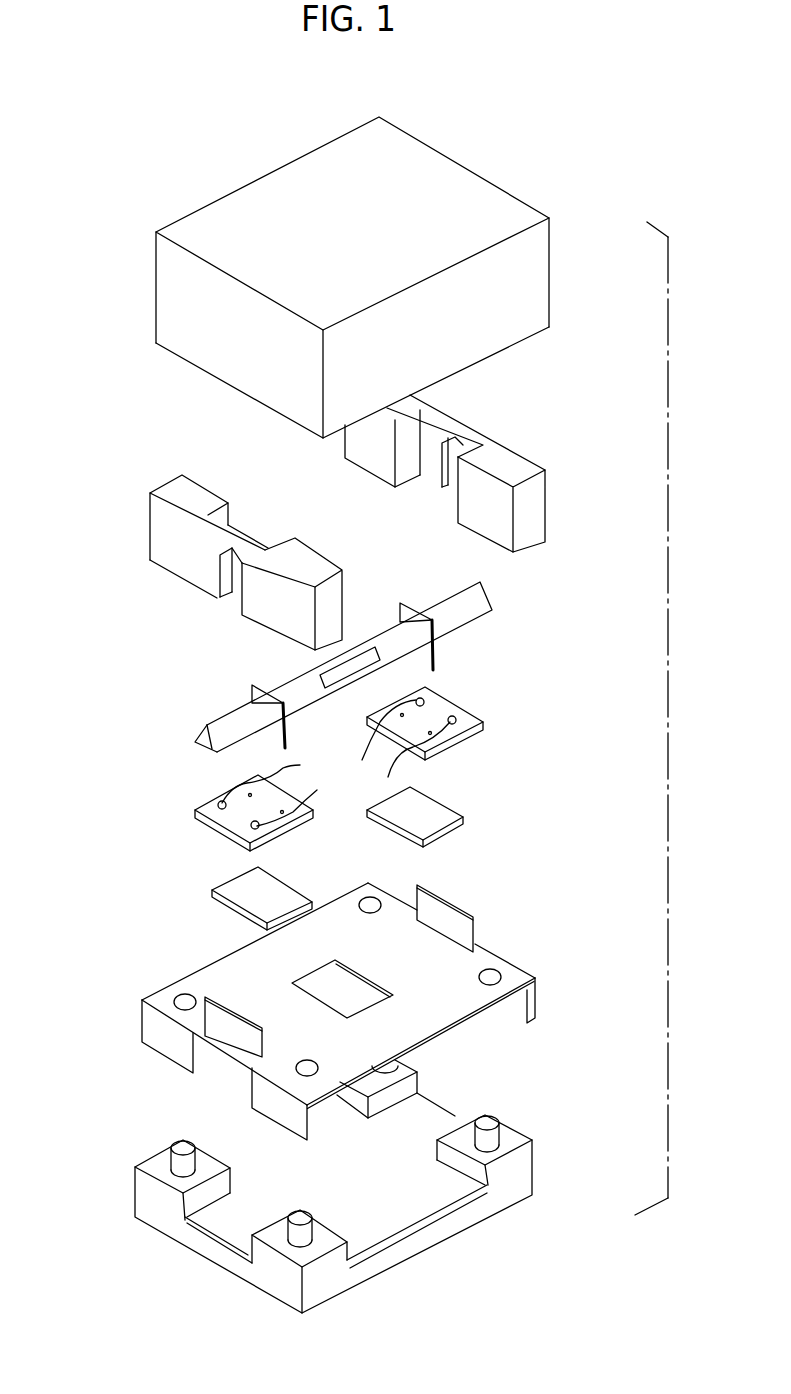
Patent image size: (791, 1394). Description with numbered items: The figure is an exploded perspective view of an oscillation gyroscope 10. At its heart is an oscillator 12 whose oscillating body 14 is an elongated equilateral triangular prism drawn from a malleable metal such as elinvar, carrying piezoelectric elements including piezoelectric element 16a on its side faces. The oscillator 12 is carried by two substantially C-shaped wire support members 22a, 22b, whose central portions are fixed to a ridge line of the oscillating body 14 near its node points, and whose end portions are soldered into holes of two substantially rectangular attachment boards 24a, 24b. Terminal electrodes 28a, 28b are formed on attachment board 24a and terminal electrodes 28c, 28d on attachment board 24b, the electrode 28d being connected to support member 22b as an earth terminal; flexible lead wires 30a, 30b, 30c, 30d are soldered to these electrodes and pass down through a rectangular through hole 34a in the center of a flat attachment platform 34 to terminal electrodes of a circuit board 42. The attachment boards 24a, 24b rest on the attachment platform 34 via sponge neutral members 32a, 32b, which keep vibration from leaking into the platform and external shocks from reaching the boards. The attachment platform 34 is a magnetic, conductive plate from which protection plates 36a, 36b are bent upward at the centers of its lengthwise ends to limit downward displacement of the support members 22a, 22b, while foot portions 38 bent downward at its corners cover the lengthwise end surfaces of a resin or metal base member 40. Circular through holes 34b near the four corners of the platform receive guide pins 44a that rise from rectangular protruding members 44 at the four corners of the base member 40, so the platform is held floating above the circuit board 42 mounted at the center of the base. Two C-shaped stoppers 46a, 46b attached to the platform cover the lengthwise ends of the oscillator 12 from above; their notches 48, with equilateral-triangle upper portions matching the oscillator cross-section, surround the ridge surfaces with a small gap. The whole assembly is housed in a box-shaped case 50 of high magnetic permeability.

The oscillation gyroscope 10 is at (600, 161).
The oscillator 12 is at (359, 653).
The oscillating body 14 is at (475, 610).
The piezoelectric element 16a is at (331, 671).
The support member 22a is at (251, 695).
The support member 22b is at (400, 607).
The attachment board 24a is at (230, 829).
The attachment board 24b is at (447, 721).
The terminal electrode 28a is at (253, 829).
The terminal electrode 28b is at (220, 806).
The terminal electrode 28c is at (473, 713).
The terminal electrode 28d is at (425, 695).
The lead wire 30a is at (313, 795).
The lead wire 30b is at (280, 767).
The lead wire 30c is at (388, 777).
The lead wire 30d is at (360, 750).
The neutral member 32a is at (253, 902).
The neutral member 32b is at (473, 813).
The attachment platform 34 is at (340, 1021).
The through hole 34a is at (377, 987).
The through hole 34b is at (377, 898).
The protection plate 36a is at (223, 1030).
The protection plate 36b is at (447, 912).
The foot portion 38 is at (150, 1021).
The base member 40 is at (330, 1189).
The circuit board 42 is at (413, 1207).
The protruding member 44 is at (413, 1087).
The guide pin 44a is at (398, 1065).
The stopper 46a is at (158, 533).
The stopper 46b is at (526, 472).
The notch 48 is at (229, 572).
The case 50 is at (463, 185).